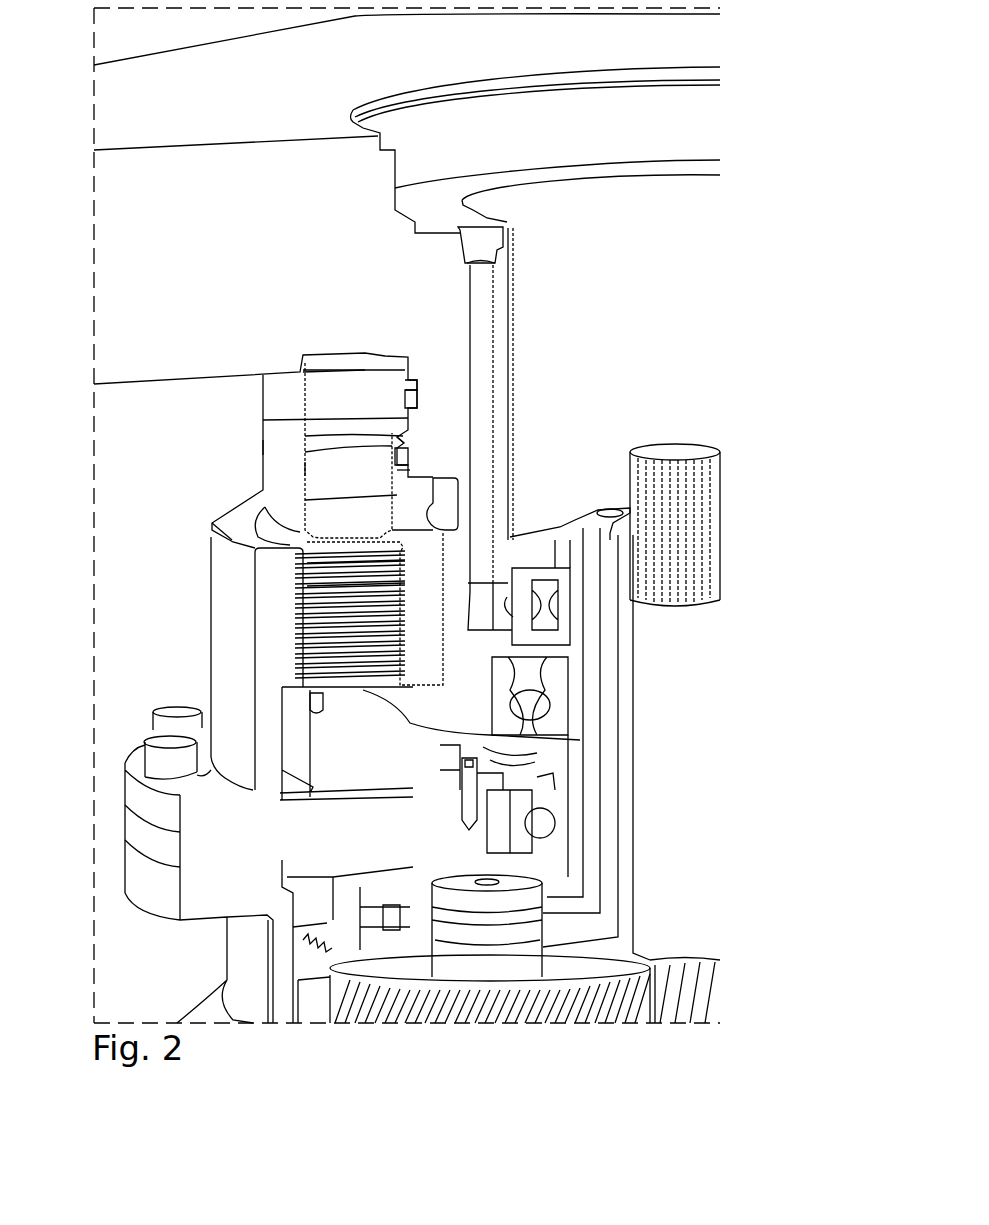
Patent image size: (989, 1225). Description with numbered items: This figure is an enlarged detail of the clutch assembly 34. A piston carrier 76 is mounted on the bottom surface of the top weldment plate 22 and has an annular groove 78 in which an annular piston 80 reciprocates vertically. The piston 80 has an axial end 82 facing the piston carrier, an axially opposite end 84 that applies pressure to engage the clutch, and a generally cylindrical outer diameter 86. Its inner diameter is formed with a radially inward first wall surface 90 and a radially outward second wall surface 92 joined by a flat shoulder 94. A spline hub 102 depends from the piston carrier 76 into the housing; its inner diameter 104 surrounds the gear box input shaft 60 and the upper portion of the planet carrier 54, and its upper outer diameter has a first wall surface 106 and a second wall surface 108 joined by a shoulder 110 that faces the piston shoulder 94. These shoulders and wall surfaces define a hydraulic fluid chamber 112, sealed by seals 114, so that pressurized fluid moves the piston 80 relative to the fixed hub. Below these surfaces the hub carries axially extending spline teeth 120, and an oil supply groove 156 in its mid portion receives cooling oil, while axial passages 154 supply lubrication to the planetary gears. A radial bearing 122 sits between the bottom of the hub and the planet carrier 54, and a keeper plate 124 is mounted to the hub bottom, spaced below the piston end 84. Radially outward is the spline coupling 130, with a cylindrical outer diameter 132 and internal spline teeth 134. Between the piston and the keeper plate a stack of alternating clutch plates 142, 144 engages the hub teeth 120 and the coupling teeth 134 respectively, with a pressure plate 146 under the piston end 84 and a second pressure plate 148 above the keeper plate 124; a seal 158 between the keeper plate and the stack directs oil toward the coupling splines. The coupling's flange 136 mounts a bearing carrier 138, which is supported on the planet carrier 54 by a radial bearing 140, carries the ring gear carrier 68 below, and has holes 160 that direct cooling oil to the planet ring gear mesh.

The top weldment plate 22 is at (130, 215).
The piston carrier 76 is at (108, 317).
The clutch assembly 34 is at (122, 468).
The annular groove 78 is at (365, 352).
The axial end 82 is at (325, 372).
The first wall surface 90 is at (263, 421).
The shoulder 94 is at (305, 436).
The outer diameter 86 is at (263, 447).
The hydraulic fluid chamber 112 is at (305, 452).
The piston 80 is at (305, 469).
The second wall surface 92 is at (305, 500).
The axially opposite end 84 is at (232, 540).
The axial passages 154 is at (480, 340).
The spline hub 102 is at (513, 357).
The first wall surface 106 is at (412, 383).
The seals 114 is at (417, 400).
The inner diameter 104 is at (513, 413).
The shoulder 110 is at (407, 437).
The second wall surface 108 is at (410, 473).
The oil supply groove 156 is at (450, 502).
The gear box input shaft 60 is at (715, 491).
The pressure plate 146 is at (365, 551).
The spline coupling 130 is at (233, 553).
The clutch plates 142 is at (405, 563).
The clutch plates 144 is at (400, 585).
The spline teeth 134 is at (410, 608).
The outer diameter 132 is at (230, 650).
The seal 158 is at (310, 703).
The keeper plate 124 is at (323, 750).
The planet carrier 54 is at (618, 627).
The spline teeth 120 is at (400, 633).
The radial bearing 122 is at (540, 703).
The second pressure plate 148 is at (545, 740).
The radial bearing 140 is at (545, 825).
The flange 136 is at (157, 803).
The bearing carrier 138 is at (157, 848).
The ring gear carrier 68 is at (152, 888).
The holes 160 is at (343, 800).